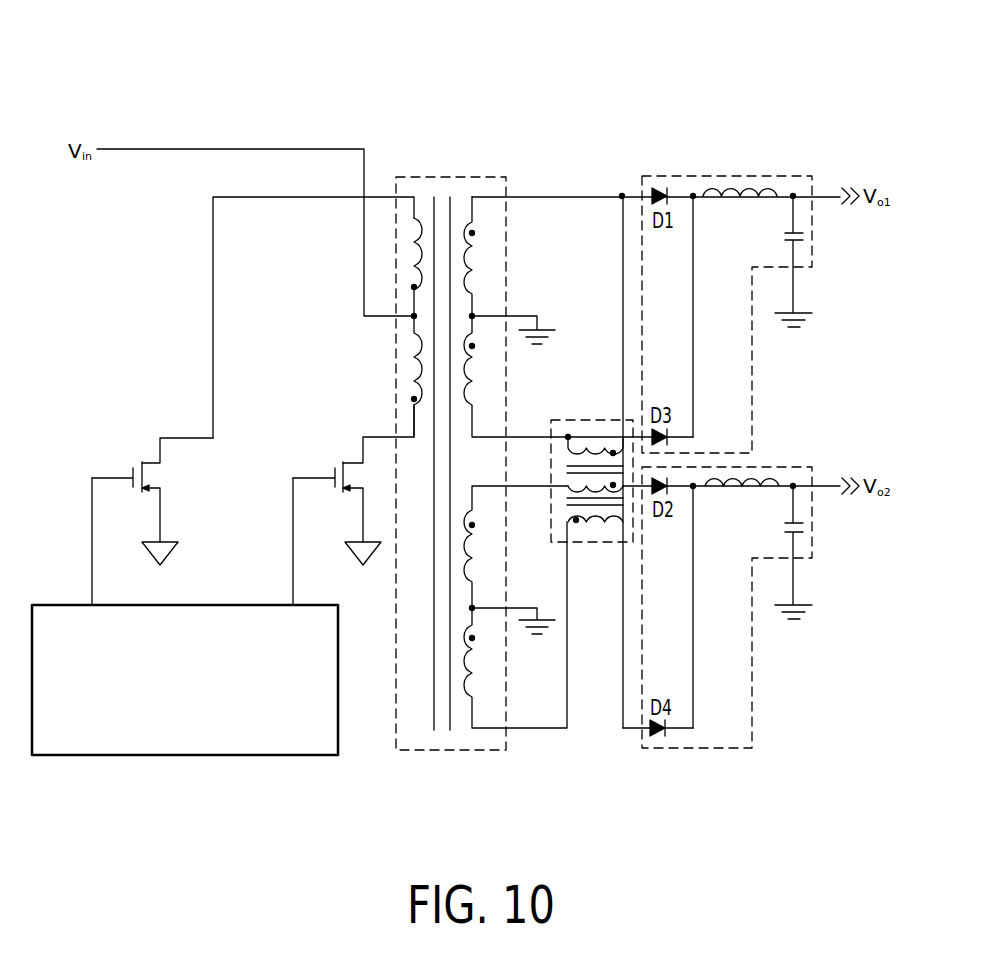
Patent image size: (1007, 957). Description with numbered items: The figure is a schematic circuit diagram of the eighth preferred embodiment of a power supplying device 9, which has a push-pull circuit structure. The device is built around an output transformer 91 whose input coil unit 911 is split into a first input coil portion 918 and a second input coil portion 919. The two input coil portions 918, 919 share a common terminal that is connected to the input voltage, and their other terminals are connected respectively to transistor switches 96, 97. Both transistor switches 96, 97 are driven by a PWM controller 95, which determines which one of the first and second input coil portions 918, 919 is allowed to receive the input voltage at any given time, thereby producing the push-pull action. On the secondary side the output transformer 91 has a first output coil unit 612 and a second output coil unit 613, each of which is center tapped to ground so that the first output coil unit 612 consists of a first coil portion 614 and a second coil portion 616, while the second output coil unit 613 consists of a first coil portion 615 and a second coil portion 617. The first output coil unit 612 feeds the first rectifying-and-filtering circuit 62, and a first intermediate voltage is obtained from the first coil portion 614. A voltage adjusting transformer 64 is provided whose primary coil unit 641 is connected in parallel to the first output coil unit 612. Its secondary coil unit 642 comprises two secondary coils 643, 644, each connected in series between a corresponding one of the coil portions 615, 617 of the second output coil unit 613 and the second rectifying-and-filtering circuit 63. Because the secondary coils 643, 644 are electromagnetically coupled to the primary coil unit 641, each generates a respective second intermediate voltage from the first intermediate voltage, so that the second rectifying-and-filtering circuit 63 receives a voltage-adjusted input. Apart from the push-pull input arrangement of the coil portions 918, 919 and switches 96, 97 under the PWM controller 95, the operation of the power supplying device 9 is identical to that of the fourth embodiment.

The power supplying device 9 is at (608, 143).
The output transformer 91 is at (478, 176).
The input coil unit 911 is at (422, 216).
The first input coil portion 918 is at (413, 244).
The second input coil portion 919 is at (413, 377).
The first output coil unit 612 is at (477, 253).
The first coil portion 614 is at (463, 270).
The second coil portion 616 is at (465, 368).
The second output coil unit 613 is at (477, 550).
The first coil portion 615 is at (463, 575).
The second coil portion 617 is at (470, 665).
The voltage adjusting transformer 64 is at (588, 418).
The primary coil unit 641 is at (585, 447).
The secondary coil unit 642 is at (627, 515).
The secondary coil 643 is at (580, 487).
The secondary coil 644 is at (580, 518).
The first rectifying-and-filtering circuit 62 is at (765, 175).
The second rectifying-and-filtering circuit 63 is at (788, 465).
The PWM controller 95 is at (243, 605).
The transistor switch 96 is at (152, 463).
The transistor switch 97 is at (357, 463).